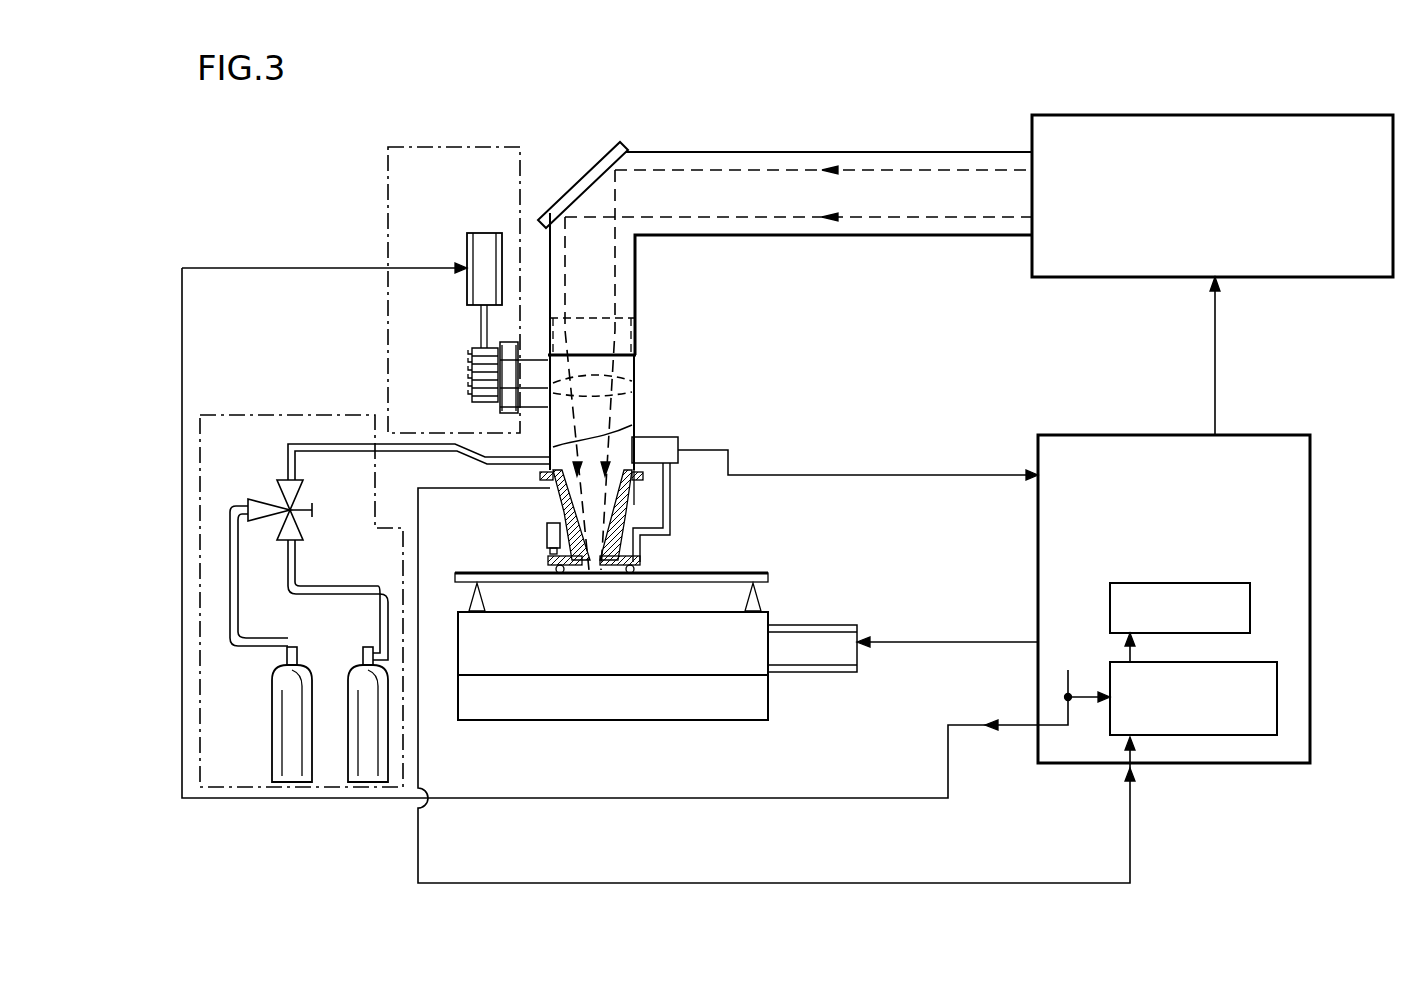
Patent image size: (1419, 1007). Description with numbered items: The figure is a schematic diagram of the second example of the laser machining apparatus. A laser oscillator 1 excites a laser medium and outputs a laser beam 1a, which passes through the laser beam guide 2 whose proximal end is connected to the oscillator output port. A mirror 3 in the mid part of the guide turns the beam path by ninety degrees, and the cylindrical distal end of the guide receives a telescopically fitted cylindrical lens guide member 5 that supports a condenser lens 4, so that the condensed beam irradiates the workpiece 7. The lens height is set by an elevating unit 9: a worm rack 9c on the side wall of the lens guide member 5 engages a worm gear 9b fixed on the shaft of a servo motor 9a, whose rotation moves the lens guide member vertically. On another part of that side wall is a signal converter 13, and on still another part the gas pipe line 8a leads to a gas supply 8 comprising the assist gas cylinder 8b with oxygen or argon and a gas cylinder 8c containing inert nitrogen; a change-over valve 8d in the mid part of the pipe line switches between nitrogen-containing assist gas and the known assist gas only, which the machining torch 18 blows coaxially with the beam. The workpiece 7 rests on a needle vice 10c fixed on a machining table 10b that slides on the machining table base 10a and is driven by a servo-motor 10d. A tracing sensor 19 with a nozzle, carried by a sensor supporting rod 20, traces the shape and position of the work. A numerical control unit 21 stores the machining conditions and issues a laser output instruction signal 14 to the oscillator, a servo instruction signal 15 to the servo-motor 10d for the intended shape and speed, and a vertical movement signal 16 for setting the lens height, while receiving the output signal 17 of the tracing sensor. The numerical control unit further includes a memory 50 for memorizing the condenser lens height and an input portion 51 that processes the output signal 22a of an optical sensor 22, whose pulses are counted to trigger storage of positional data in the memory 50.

The laser oscillator 1 is at (1285, 115).
The laser beam 1a is at (938, 168).
The laser beam guide 2 is at (796, 152).
The mirror 3 is at (620, 145).
The condenser lens 4 is at (632, 381).
The lens guide member 5 is at (632, 425).
The workpiece 7 is at (455, 578).
The assist gas supply unit 8 is at (276, 415).
The gas pipe line 8a is at (348, 452).
The gas cylinder 8b is at (352, 668).
The gas cylinder 8c is at (272, 742).
The change-over valve 8d is at (265, 500).
The elevating unit 9 is at (482, 147).
The servo motor 9a is at (480, 233).
The worm gear 9b is at (472, 360).
The worm rack 9c is at (500, 410).
The machining table base 10a is at (770, 712).
The machining table 10b is at (690, 668).
The needle vice 10c is at (760, 603).
The servo-motor 10d is at (835, 625).
The signal converter 13 is at (678, 445).
The laser output instruction signal 14 is at (1217, 365).
The servo instruction signal 15 is at (966, 642).
The vertical movement signal 16 is at (950, 798).
The output signal 17 is at (930, 475).
The machining torch 18 is at (632, 503).
The tracing sensor 19 is at (554, 562).
The sensor supporting rod 20 is at (665, 540).
The numerical control unit 21 is at (1312, 522).
The optical sensor 22 is at (547, 530).
The output signal 22a is at (542, 883).
The memory 50 is at (1240, 583).
The input portion 51 is at (1257, 662).